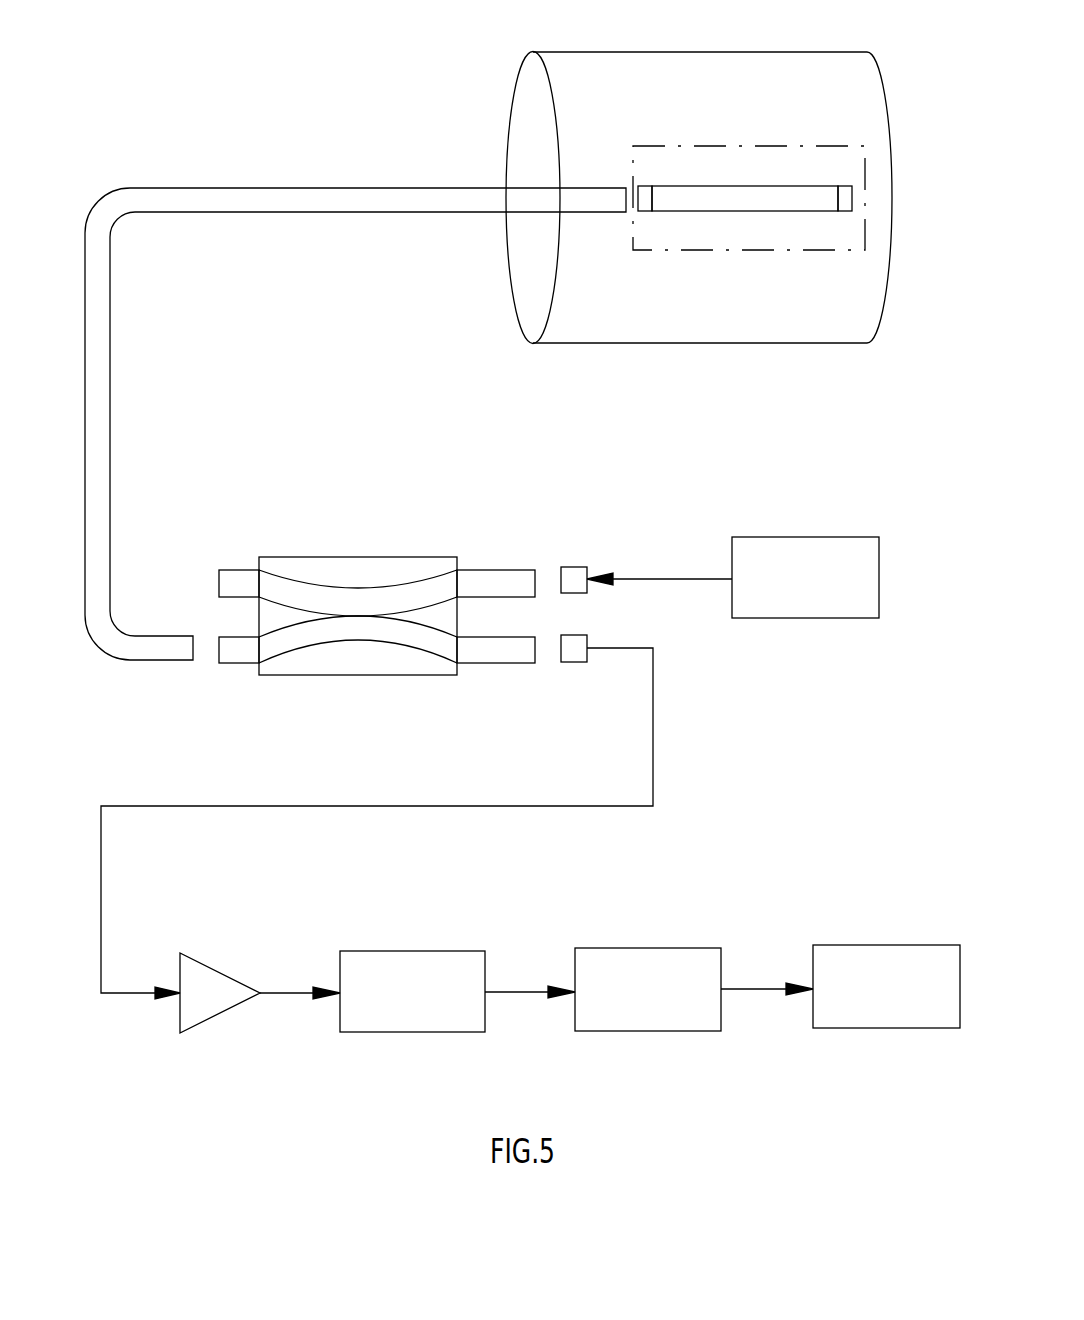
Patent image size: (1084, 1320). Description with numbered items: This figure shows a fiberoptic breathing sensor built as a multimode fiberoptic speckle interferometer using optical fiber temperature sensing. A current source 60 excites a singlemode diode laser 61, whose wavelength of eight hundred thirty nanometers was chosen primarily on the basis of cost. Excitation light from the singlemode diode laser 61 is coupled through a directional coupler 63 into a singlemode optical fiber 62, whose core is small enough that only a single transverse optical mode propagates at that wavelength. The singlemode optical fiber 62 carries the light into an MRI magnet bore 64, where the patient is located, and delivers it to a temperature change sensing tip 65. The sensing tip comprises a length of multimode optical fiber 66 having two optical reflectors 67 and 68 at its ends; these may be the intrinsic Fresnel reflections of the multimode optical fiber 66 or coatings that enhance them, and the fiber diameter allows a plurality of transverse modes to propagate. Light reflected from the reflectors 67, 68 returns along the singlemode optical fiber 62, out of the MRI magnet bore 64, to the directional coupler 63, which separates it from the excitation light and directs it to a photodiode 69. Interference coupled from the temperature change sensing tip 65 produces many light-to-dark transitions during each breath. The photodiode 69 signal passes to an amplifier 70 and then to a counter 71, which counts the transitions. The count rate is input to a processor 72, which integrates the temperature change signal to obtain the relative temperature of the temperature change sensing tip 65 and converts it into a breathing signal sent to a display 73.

The current source 60 is at (783, 537).
The singlemode diode laser 61 is at (575, 567).
The singlemode optical fiber 62 is at (110, 422).
The directional coupler 63 is at (325, 557).
The MRI magnet bore 64 is at (745, 52).
The temperature change sensing tip 65 is at (678, 147).
The multimode optical fiber 66 is at (740, 212).
The optical reflector 67 is at (640, 212).
The optical reflector 68 is at (845, 212).
The photodiode 69 is at (572, 662).
The amplifier 70 is at (217, 1017).
The counter 71 is at (420, 1032).
The processor 72 is at (663, 1031).
The display 73 is at (883, 1028).